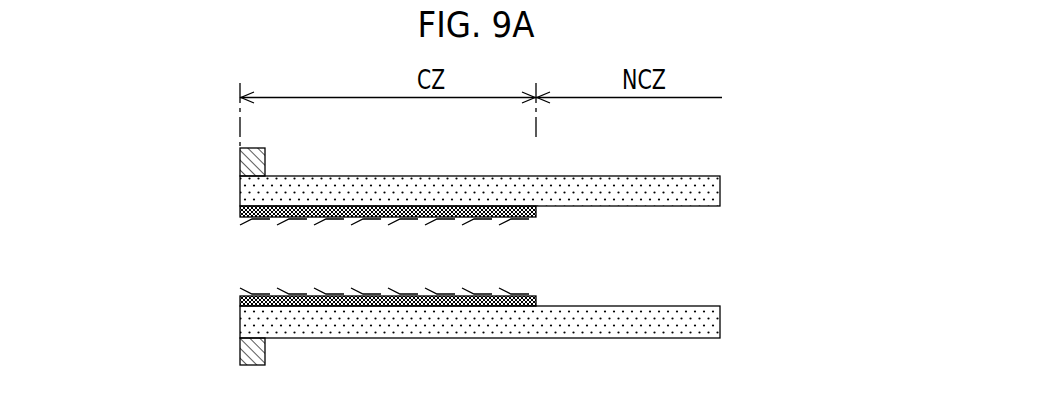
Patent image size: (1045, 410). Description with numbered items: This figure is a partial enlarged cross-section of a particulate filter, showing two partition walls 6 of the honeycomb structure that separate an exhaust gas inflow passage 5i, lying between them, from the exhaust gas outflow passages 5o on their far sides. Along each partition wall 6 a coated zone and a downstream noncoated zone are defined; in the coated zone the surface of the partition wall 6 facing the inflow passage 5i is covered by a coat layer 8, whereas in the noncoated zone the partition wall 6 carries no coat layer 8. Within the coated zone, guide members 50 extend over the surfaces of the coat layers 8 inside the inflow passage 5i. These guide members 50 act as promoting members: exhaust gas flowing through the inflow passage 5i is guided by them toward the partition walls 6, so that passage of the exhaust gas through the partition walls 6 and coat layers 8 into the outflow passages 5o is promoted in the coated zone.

The partition wall 6 is at (686, 178).
The coat layer 8 is at (241, 208).
The guide member 50 is at (283, 223).
The exhaust gas inflow passage 5i is at (635, 269).
The exhaust gas outflow passage 5o is at (635, 381).